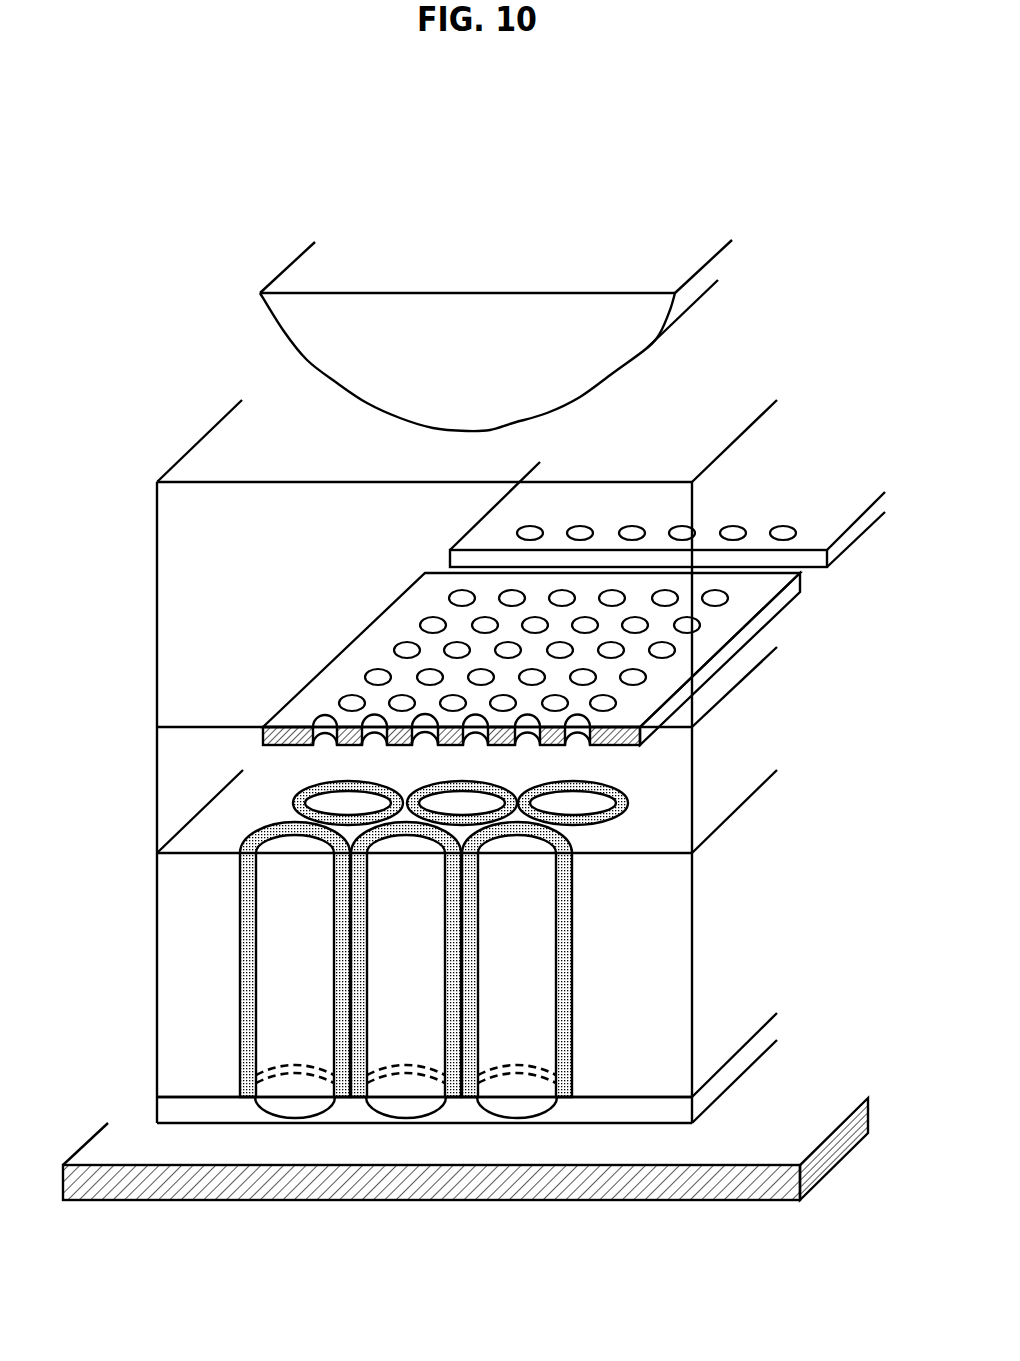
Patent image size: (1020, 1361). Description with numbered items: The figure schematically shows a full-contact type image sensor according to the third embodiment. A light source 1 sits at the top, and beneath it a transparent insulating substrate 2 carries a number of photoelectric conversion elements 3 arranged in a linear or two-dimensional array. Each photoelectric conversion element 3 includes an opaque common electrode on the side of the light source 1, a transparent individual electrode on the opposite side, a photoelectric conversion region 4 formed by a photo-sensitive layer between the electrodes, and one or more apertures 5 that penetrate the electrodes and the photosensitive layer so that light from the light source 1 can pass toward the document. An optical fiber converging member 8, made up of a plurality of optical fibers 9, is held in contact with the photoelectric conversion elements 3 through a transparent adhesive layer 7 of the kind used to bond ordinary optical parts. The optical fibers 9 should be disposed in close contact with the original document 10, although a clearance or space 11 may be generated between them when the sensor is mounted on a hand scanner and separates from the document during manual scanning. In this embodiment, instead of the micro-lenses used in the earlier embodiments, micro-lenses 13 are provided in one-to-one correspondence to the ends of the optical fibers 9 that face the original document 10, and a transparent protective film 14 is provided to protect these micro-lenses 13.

The light source 1 is at (308, 277).
The transparent insulating substrate 2 is at (187, 629).
The photoelectric conversion element 3 is at (325, 648).
The photoelectric conversion region 4 is at (430, 600).
The aperture 5 is at (407, 648).
The adhesive layer 7 is at (750, 740).
The optical fiber converging member 8 is at (750, 920).
The optical fiber 9 is at (543, 967).
The original document 10 is at (107, 1150).
The clearance or space 11 is at (653, 1147).
The micro-lens 13 is at (517, 1107).
The transparent protective film 14 is at (668, 1110).